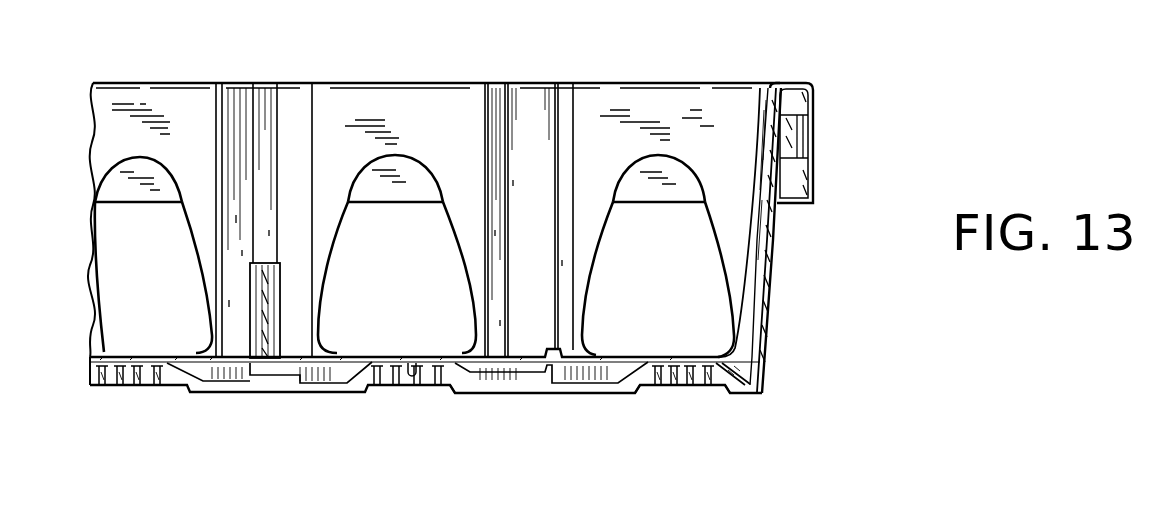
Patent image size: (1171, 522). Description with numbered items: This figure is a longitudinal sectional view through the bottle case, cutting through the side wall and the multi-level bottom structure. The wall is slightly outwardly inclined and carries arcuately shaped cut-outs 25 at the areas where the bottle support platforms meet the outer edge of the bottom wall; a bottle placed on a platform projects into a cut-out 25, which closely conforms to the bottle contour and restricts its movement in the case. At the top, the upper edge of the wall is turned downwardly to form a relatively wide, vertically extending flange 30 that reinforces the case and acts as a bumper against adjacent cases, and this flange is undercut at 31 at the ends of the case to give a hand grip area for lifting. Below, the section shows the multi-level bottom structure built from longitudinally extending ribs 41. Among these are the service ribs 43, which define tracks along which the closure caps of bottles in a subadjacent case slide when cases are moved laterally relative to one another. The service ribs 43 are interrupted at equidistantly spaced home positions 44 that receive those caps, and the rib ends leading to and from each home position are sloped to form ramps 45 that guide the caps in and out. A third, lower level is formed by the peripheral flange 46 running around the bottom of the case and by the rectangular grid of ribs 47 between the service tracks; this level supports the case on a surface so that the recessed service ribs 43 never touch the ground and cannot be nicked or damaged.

The cut-out 25 is at (330, 287).
The flange 30 is at (813, 142).
The undercut 31 is at (813, 180).
The longitudinally extending ribs 41 is at (206, 392).
The service ribs 43 is at (305, 392).
The home positions 44 is at (413, 362).
The ramps 45 is at (365, 392).
The peripheral flange 46 is at (612, 392).
The rectangular grid of ribs 47 is at (530, 394).